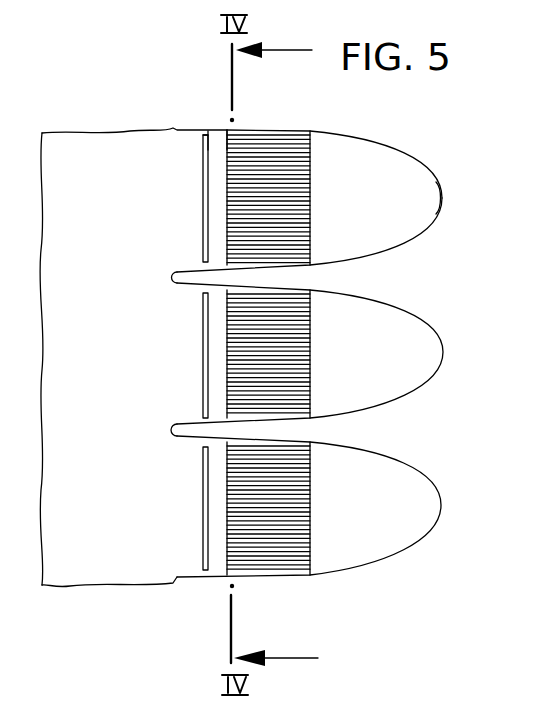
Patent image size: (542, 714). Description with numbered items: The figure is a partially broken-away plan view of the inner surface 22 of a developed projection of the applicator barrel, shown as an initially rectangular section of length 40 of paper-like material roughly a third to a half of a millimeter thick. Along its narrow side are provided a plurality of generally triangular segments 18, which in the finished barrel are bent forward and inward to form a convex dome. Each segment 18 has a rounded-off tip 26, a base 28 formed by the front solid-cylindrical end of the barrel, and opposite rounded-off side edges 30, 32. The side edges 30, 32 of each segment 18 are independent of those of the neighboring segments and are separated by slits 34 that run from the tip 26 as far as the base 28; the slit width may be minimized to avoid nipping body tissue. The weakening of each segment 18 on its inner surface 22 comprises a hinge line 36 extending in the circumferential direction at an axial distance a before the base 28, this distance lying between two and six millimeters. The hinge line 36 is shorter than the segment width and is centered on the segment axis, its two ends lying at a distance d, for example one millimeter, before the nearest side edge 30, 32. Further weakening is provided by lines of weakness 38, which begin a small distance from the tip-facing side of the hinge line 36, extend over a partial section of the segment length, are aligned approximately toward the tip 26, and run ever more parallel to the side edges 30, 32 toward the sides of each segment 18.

The segment 18 is at (340, 190).
The inner surface 22 is at (316, 353).
The rounded-off tip 26 is at (443, 198).
The base 28 is at (187, 349).
The side edge 30 is at (371, 146).
The side edge 32 is at (383, 252).
The slit 34 is at (176, 279).
The hinge line 36 is at (203, 218).
The line of weakness 38 is at (292, 367).
The section of length 40 is at (84, 137).
The axial distance a is at (221, 153).
The distance d is at (201, 134).